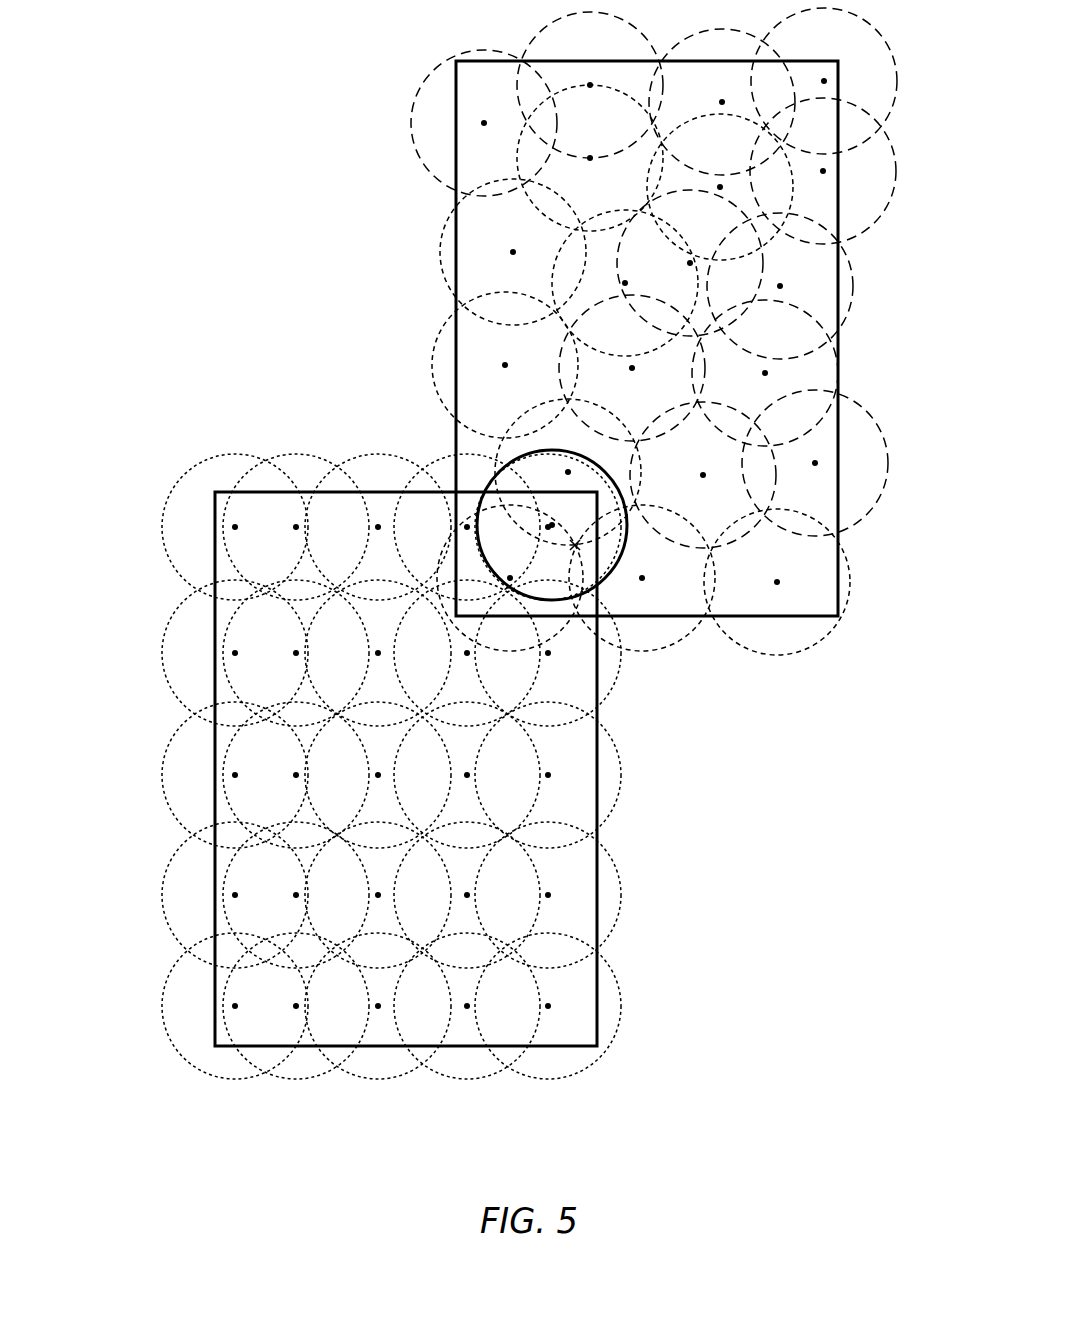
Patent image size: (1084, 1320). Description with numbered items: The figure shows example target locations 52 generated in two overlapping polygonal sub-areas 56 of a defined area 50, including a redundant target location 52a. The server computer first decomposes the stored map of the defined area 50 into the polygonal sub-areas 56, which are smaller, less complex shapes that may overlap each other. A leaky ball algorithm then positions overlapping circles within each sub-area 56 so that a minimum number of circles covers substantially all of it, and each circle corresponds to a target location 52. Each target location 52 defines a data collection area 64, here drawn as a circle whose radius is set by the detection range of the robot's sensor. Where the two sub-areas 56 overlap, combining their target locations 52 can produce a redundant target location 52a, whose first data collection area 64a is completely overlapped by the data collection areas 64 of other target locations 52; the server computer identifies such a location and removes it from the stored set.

The defined area 50 is at (262, 64).
The polygonal sub-area 56 is at (453, 120).
The data collection area 64 is at (452, 197).
The target location 52 is at (513, 252).
The first data collection area 64a is at (548, 520).
The redundant target location 52a is at (575, 545).